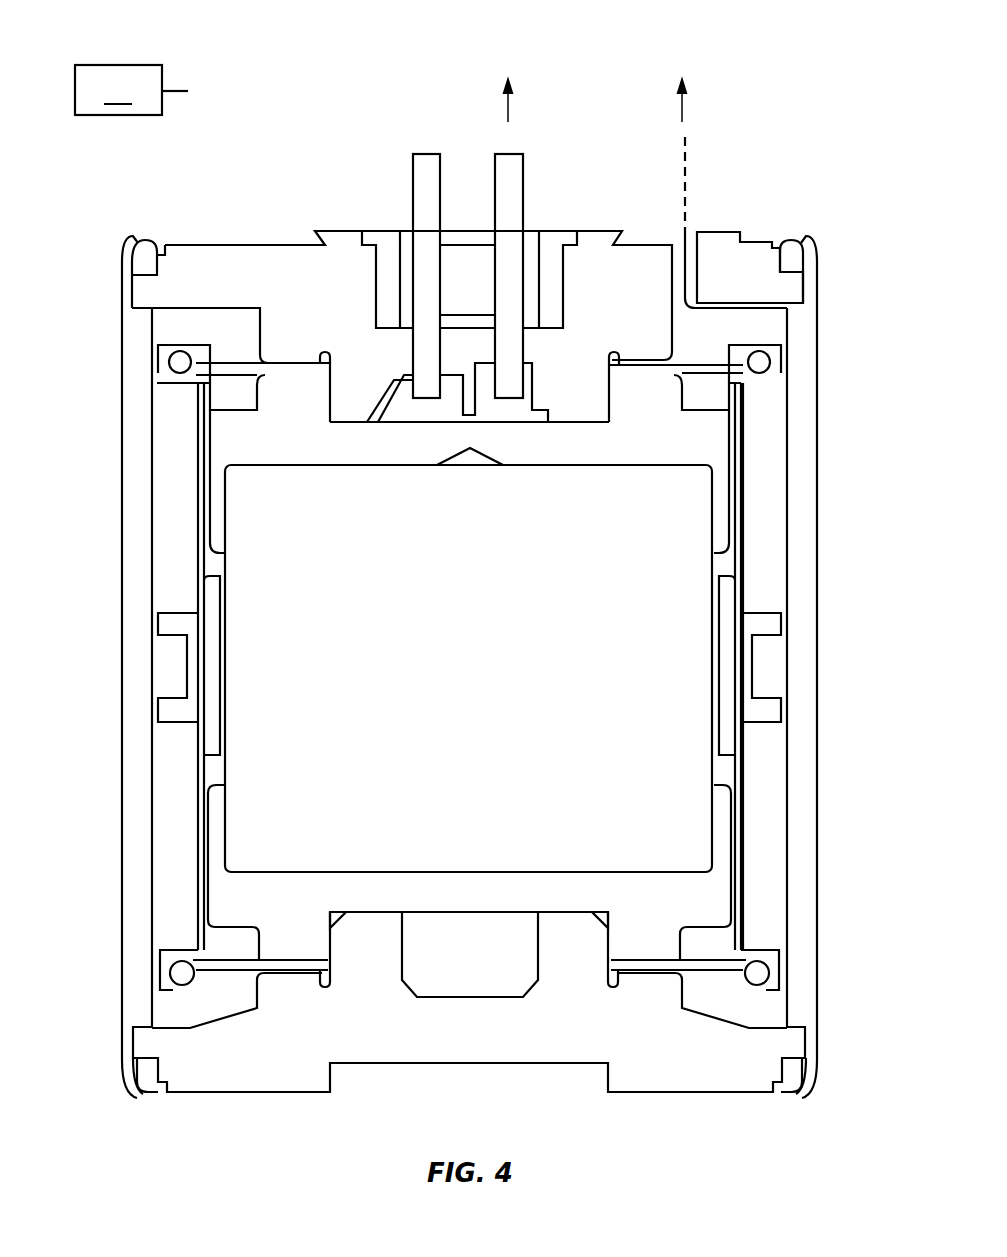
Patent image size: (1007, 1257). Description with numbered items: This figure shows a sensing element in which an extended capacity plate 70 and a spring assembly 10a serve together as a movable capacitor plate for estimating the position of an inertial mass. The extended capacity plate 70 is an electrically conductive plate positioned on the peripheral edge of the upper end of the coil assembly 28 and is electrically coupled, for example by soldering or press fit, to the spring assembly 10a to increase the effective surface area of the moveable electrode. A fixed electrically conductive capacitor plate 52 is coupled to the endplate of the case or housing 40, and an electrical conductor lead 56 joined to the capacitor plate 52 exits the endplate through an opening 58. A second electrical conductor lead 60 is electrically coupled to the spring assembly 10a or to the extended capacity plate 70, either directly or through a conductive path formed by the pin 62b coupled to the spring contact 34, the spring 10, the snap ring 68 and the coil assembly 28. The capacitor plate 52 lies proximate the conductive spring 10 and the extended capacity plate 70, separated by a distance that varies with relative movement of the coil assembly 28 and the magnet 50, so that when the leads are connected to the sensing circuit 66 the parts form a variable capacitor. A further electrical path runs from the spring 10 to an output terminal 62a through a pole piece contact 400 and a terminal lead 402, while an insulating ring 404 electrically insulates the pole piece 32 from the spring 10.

The spring 10 is at (210, 384).
The spring assembly 10a is at (161, 381).
The coil assembly 28 is at (752, 665).
The pole piece 32 is at (204, 430).
The spring contact 34 is at (292, 362).
The case or housing 40 is at (122, 790).
The magnet 50 is at (700, 812).
The capacitor plate 52 is at (183, 320).
The electrical conductor lead 56 is at (685, 187).
The opening 58 is at (697, 232).
The second electrical conductor lead 60 is at (175, 91).
The output terminal 62a is at (430, 153).
The pin 62b is at (508, 153).
The sensing circuit 66 is at (694, 71).
The snap ring 68 is at (169, 362).
The extended capacity plate 70 is at (205, 346).
The pole piece contact 400 is at (350, 427).
The terminal lead 402 is at (392, 402).
The insulating ring 404 is at (633, 372).